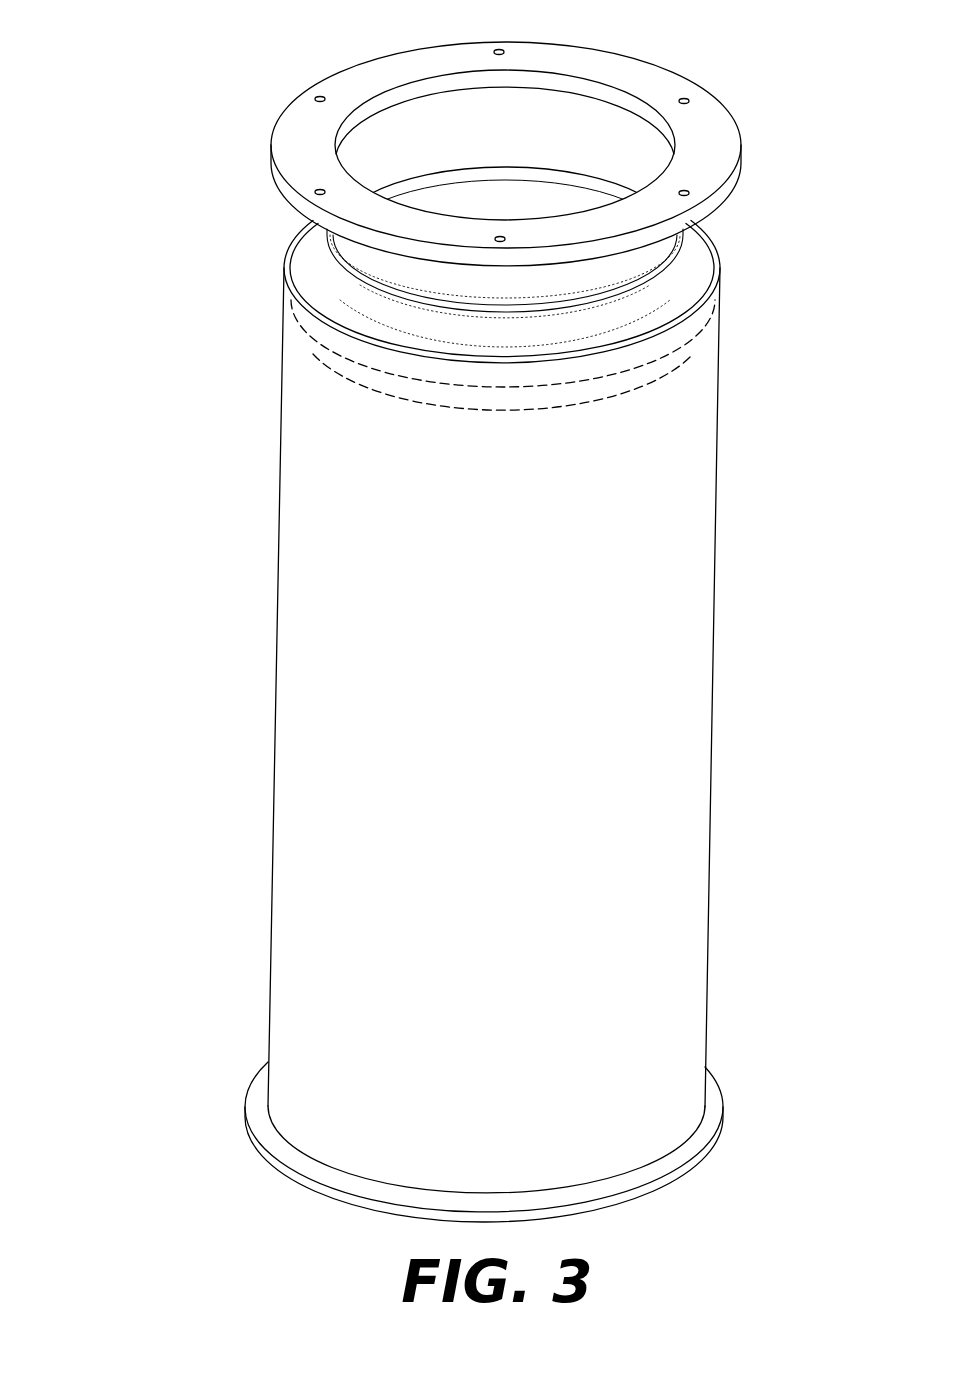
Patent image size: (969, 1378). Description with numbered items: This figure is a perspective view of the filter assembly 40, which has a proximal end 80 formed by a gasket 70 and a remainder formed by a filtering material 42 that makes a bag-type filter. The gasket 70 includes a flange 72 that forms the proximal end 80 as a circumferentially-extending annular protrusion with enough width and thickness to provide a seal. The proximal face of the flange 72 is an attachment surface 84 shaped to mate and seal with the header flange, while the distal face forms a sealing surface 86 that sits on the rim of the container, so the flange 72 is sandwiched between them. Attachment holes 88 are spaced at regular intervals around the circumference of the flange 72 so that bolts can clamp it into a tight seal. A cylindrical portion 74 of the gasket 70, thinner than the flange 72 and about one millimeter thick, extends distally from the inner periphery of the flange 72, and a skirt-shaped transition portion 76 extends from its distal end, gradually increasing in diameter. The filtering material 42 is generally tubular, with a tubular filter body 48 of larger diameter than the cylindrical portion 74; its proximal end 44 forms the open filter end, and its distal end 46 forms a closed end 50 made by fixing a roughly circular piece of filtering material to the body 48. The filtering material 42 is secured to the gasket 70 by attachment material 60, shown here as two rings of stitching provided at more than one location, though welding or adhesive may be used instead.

The filter assembly 40 is at (162, 56).
The filtering material 42 is at (292, 613).
The proximal end of filtering material 44 is at (703, 298).
The distal end 46 is at (315, 1190).
The tubular filter body 48 is at (695, 573).
The closed end 50 is at (275, 1167).
The attachment material 60 is at (308, 333).
The gasket 70 is at (775, 236).
The flange 72 is at (728, 188).
The cylindrical portion 74 is at (405, 265).
The transition portion 76 is at (694, 252).
The proximal end 80 is at (362, 64).
The attachment surface 84 is at (720, 118).
The sealing surface 86 is at (303, 215).
The attachment holes 88 is at (689, 100).